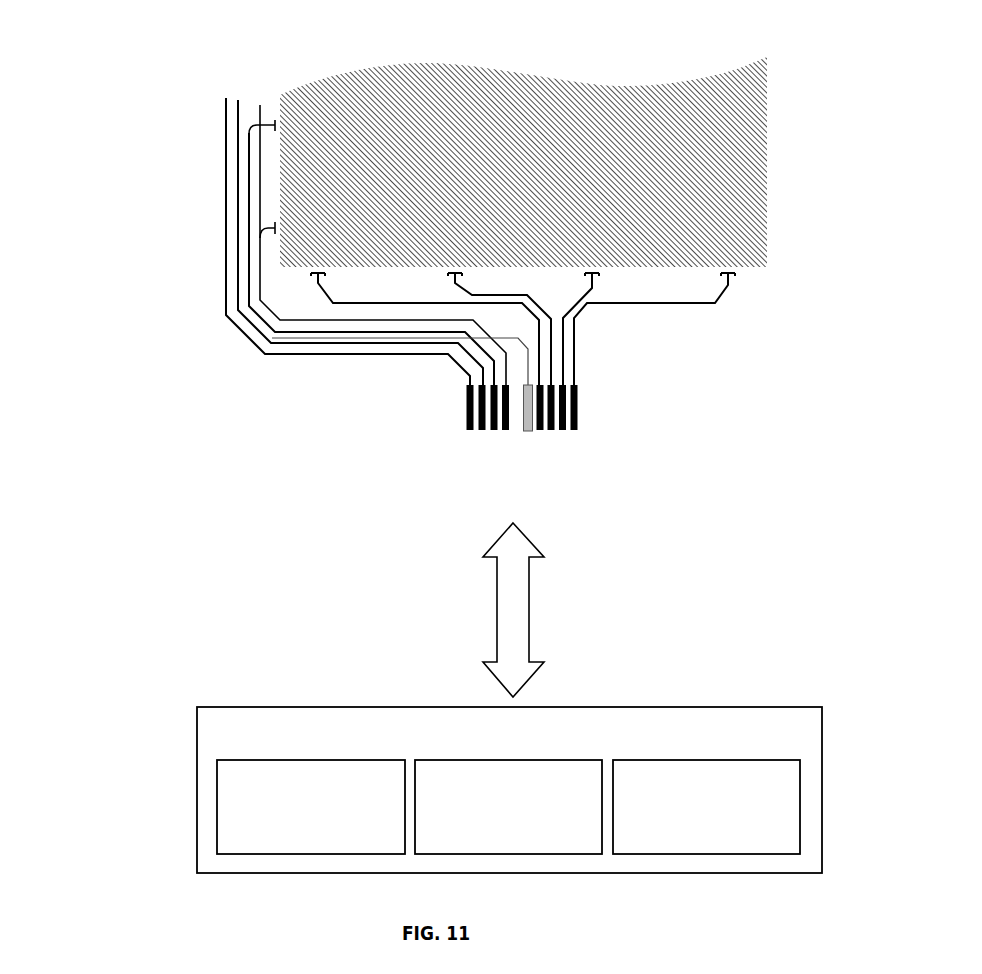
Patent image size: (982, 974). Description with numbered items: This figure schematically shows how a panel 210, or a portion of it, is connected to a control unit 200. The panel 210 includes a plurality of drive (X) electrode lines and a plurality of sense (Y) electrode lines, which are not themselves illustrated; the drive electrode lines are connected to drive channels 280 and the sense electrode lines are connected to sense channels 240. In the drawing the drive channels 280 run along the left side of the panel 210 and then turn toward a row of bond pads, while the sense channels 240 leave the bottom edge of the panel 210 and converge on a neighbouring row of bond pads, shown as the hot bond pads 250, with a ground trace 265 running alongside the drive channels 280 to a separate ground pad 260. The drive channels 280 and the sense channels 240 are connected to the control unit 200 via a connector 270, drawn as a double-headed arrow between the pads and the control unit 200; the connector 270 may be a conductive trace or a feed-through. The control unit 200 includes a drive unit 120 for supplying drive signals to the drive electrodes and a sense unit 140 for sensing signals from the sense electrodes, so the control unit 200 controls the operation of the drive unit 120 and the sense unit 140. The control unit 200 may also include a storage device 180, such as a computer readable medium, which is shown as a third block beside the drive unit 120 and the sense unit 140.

The panel 210 is at (532, 123).
The drive channels 280 is at (240, 337).
The ground trace 265 is at (520, 349).
The ground 260 is at (528, 433).
The sense channels 240 is at (577, 342).
The hot bond pads 250 is at (579, 408).
The connector 270 is at (533, 606).
The control unit 200 is at (509, 790).
The drive unit 120 is at (311, 807).
The sense unit 140 is at (508, 807).
The storage device 180 is at (706, 807).